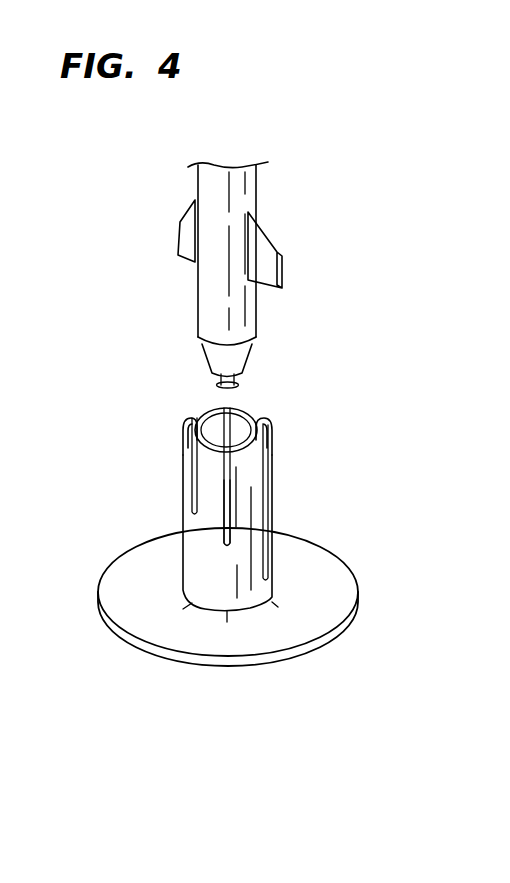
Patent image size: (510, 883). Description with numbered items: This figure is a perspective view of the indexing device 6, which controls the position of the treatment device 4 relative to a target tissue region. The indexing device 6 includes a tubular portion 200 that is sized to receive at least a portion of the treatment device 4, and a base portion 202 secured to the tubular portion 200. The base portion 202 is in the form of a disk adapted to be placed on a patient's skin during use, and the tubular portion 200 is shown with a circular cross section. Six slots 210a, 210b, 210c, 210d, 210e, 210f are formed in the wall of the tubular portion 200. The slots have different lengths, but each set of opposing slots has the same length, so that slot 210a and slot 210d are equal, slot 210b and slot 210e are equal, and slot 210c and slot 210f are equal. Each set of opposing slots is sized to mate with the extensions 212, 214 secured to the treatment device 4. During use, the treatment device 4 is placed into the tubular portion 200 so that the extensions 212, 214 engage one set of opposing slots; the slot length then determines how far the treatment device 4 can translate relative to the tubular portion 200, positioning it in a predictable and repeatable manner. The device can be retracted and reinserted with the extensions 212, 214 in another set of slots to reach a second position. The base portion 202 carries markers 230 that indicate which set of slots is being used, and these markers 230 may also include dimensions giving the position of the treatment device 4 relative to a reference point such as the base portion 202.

The treatment device 4 is at (257, 313).
The indexing device 6 is at (365, 462).
The tubular portion 200 is at (210, 577).
The base portion 202 is at (333, 600).
The slot 210a is at (268, 510).
The slot 210b is at (220, 533).
The slot 210c is at (190, 452).
The slot 210d is at (191, 414).
The slot 210e is at (226, 408).
The slot 210f is at (255, 412).
The extension 212 is at (283, 273).
The extension 214 is at (178, 238).
The markers 230 is at (267, 610).